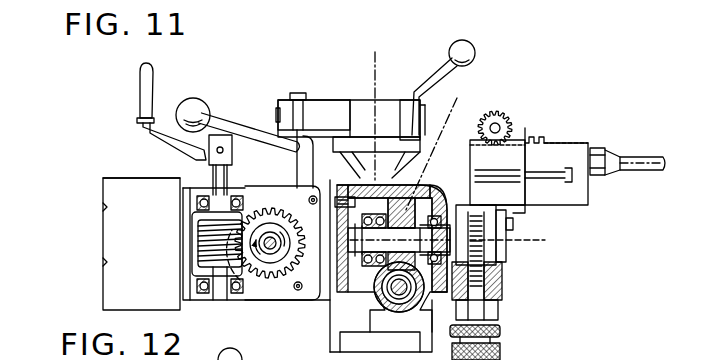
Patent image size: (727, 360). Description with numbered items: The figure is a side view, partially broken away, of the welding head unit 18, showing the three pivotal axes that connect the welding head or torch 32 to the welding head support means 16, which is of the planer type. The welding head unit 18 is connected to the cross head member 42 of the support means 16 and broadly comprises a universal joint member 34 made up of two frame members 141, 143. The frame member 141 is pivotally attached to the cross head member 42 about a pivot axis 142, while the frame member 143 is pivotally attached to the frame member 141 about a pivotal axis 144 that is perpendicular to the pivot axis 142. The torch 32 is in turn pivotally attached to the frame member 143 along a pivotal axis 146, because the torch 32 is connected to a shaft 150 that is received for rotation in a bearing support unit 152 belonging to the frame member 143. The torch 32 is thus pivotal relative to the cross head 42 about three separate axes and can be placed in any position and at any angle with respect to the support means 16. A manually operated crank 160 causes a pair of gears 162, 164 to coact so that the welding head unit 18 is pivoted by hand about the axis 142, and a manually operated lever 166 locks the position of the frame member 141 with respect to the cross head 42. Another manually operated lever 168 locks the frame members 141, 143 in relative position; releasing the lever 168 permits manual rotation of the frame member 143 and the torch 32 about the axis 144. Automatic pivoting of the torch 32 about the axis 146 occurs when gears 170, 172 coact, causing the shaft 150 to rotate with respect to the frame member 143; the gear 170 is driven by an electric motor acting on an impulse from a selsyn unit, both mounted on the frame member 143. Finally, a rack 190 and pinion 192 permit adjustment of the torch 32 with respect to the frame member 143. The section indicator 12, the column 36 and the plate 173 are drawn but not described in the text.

The section line 12- 12 is at (478, 86).
The welding head support means 16 is at (101, 244).
The welding head unit 18 is at (297, 90).
The welding head or torch 32 is at (626, 160).
The universal joint member 34 is at (340, 124).
The adjusting column 36 is at (510, 253).
The cross head member 42 is at (146, 178).
The frame member 141 is at (297, 155).
The pivot axis 142 is at (271, 241).
The frame member 143 is at (388, 143).
The pivotal axis 144 is at (375, 65).
The pivotal axis 146 is at (530, 243).
The shaft 150 is at (432, 237).
The bearing support unit 152 is at (345, 295).
The manually operated crank 160 is at (139, 86).
The gear 162 is at (197, 258).
The gear 164 is at (268, 296).
The manually operated lever 166 is at (192, 108).
The manually operated lever 168 is at (450, 51).
The gear 170 is at (390, 297).
The gear 172 is at (398, 206).
The top plate 173 is at (355, 143).
The rack 190 is at (535, 140).
The pinion 192 is at (505, 118).